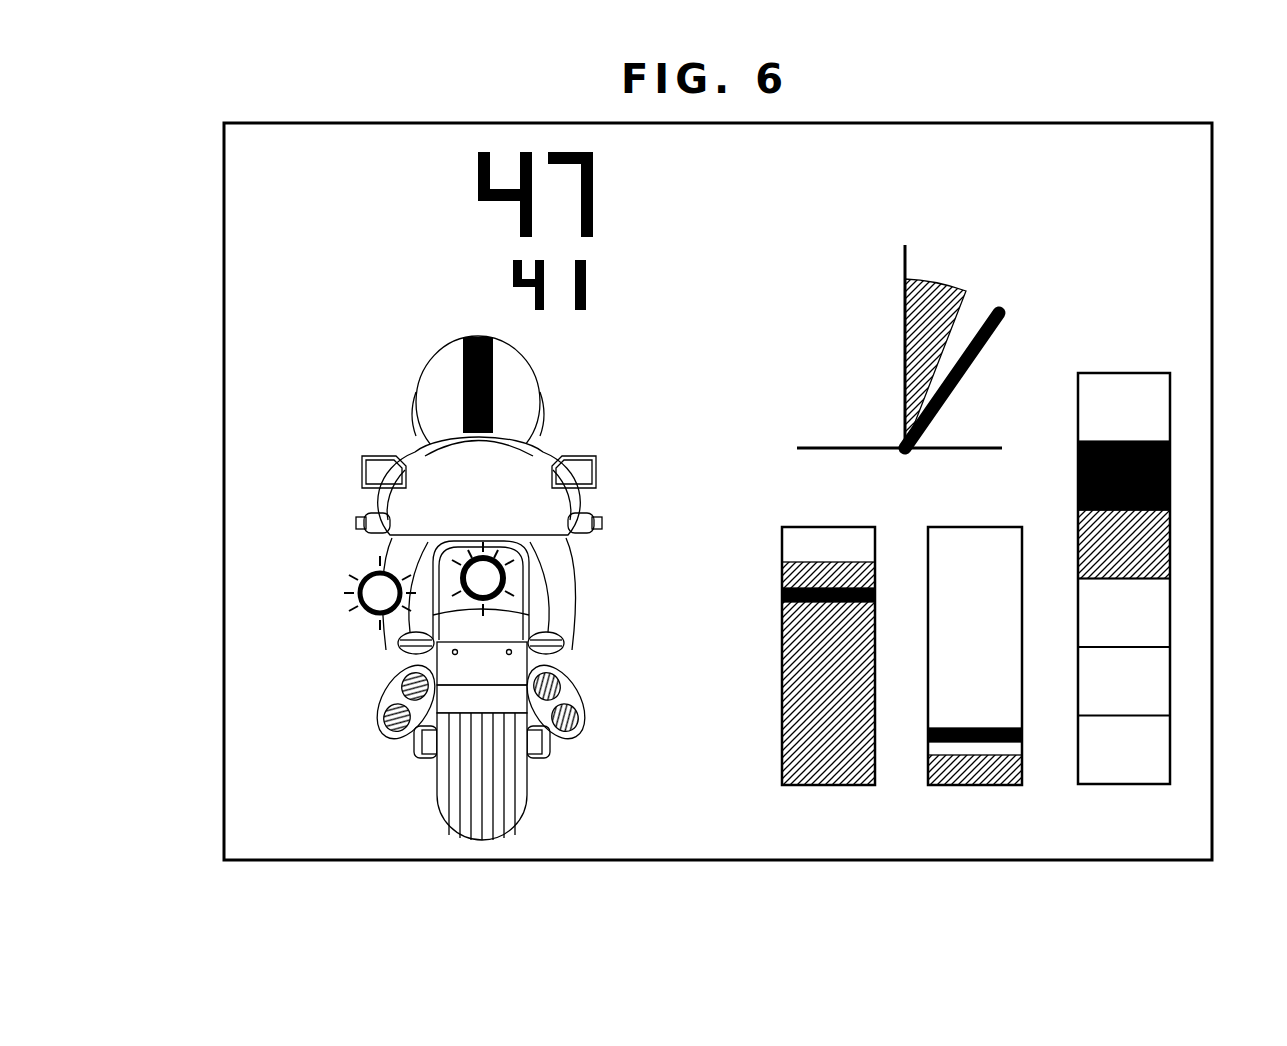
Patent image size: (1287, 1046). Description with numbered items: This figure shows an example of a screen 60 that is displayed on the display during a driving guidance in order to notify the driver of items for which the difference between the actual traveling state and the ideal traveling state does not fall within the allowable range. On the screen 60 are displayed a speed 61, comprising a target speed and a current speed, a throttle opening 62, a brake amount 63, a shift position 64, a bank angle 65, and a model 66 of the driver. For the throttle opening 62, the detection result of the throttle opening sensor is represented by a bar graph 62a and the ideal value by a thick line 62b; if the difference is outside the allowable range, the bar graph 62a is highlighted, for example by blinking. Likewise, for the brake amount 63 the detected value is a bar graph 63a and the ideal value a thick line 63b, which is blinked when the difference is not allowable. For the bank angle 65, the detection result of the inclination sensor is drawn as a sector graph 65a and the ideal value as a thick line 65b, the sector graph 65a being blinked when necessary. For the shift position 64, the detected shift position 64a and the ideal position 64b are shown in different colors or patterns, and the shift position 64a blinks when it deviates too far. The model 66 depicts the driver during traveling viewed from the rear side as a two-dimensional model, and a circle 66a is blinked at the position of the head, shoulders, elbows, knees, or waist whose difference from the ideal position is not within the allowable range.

The screen 60 is at (1170, 123).
The speed 61 is at (250, 238).
The throttle opening 62 is at (782, 733).
The bar graph 62a is at (790, 662).
The thick line 62b is at (790, 592).
The brake amount 63 is at (1044, 735).
The bar graph 63a is at (1020, 776).
The thick line 63b is at (1020, 736).
The shift position 64 is at (1177, 548).
The shift position 64a is at (1170, 546).
The ideal position 64b is at (1170, 468).
The bank angle 65 is at (910, 347).
The sector graph 65a is at (934, 280).
The thick line 65b is at (990, 312).
The model 66 is at (375, 588).
The circle 66a is at (354, 607).